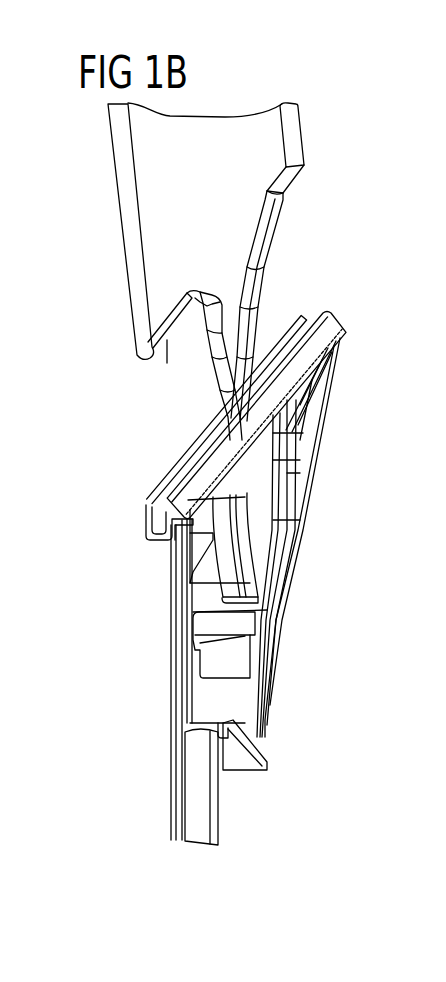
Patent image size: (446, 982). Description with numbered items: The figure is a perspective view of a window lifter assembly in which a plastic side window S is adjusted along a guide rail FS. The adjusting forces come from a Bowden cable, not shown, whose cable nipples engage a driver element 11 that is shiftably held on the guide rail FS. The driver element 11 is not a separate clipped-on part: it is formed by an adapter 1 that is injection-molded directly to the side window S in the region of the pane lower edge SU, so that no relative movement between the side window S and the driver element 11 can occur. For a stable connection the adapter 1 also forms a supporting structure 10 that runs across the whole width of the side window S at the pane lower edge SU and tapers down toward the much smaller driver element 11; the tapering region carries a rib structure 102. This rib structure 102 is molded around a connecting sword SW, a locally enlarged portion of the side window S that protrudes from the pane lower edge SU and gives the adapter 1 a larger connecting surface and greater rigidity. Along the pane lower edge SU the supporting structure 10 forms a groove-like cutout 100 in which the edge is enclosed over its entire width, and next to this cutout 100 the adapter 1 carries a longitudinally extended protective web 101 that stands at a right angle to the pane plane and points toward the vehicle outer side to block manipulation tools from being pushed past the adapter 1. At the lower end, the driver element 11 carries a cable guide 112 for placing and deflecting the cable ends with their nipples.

The side window S is at (260, 139).
The connecting sword SW is at (237, 303).
The pane lower edge SU is at (167, 362).
The protective web 101 is at (330, 332).
The supporting structure 10 is at (316, 405).
The rib structure 102 is at (297, 473).
The adapter 1 is at (318, 534).
The groove-like cutout 100 is at (146, 529).
The cable guide 112 is at (245, 638).
The guide rail FS is at (197, 775).
The driver element 11 is at (252, 778).